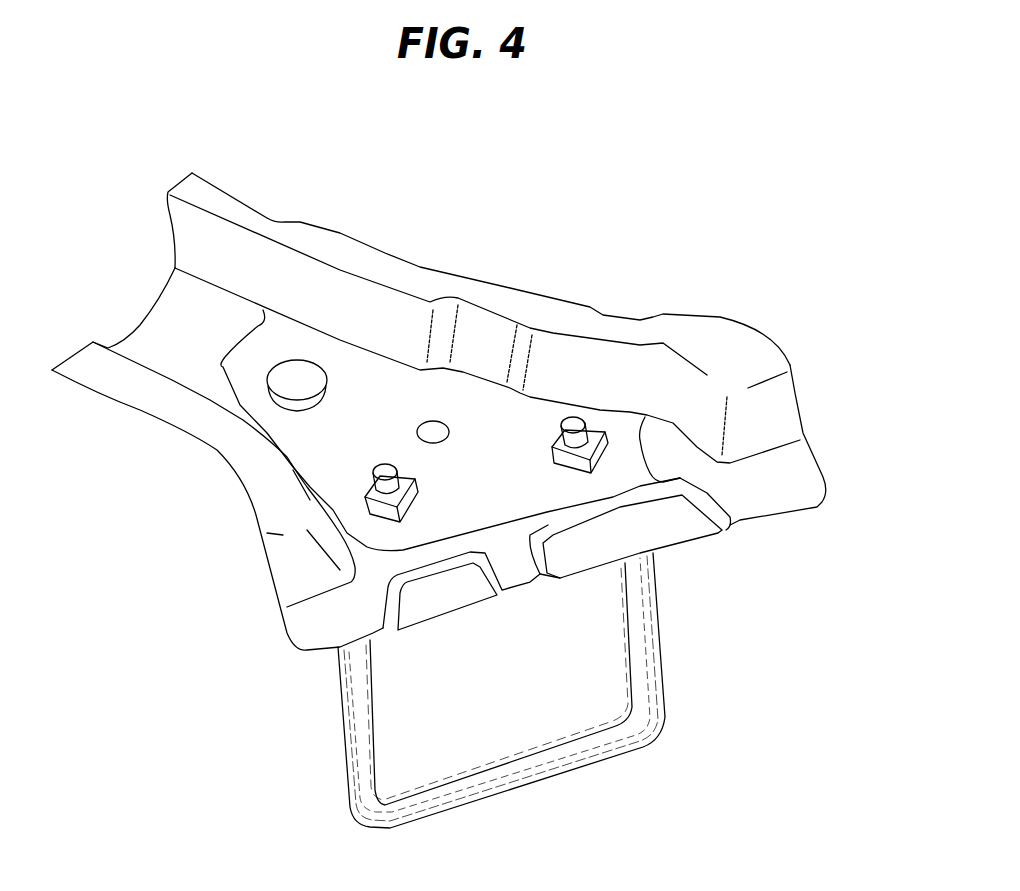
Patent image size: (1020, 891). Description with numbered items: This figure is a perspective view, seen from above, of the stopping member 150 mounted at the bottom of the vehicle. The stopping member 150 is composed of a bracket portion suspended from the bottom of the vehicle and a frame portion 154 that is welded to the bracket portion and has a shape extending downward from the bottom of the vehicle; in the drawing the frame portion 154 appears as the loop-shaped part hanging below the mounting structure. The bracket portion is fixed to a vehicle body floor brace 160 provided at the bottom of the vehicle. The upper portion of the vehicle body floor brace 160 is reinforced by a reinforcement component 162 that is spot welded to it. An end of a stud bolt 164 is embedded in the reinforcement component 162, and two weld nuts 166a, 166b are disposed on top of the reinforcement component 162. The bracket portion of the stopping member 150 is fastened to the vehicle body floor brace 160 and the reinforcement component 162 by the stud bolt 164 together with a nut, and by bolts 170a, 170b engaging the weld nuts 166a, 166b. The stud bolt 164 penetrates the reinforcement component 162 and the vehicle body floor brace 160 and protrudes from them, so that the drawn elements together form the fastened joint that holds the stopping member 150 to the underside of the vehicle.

The stopping member 150 is at (469, 690).
The frame portion 154 is at (365, 767).
The vehicle body floor brace 160 is at (439, 411).
The reinforcement component 162 is at (614, 430).
The stud bolt 164 is at (313, 377).
The weld nut 166a is at (423, 464).
The weld nut 166b is at (539, 438).
The bolt 170a is at (383, 472).
The bolt 170b is at (561, 426).